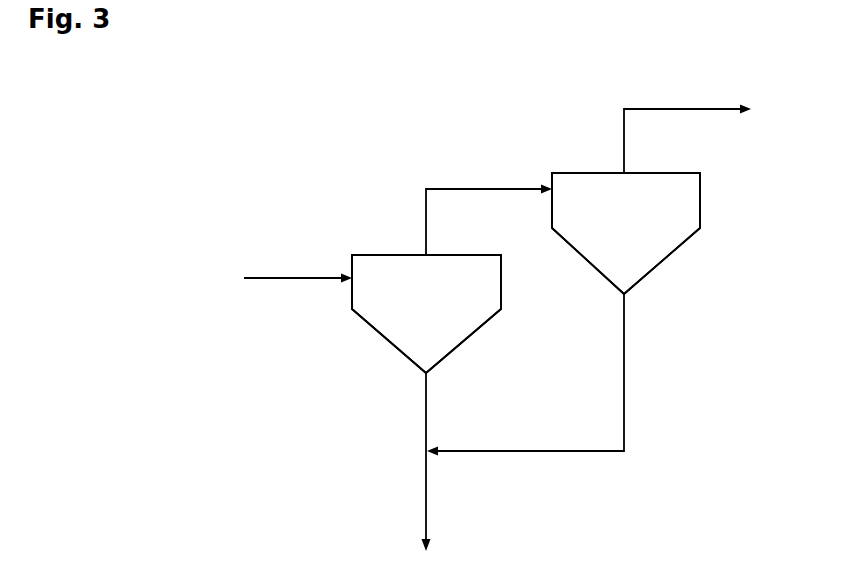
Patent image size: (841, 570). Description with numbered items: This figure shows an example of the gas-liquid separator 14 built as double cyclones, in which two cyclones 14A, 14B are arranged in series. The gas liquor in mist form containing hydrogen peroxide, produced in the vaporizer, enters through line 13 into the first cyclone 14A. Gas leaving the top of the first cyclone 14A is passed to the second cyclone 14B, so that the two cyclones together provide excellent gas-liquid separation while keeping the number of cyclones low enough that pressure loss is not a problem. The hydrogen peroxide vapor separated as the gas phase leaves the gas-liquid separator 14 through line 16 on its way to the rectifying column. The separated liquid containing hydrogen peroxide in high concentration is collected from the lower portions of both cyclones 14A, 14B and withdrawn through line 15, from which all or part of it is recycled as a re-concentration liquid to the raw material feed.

The line 13 is at (306, 276).
The gas-liquid separator 14 is at (440, 132).
The cyclone 14A is at (372, 254).
The cyclone 14B is at (580, 172).
The line 15 is at (428, 500).
The line 16 is at (683, 108).